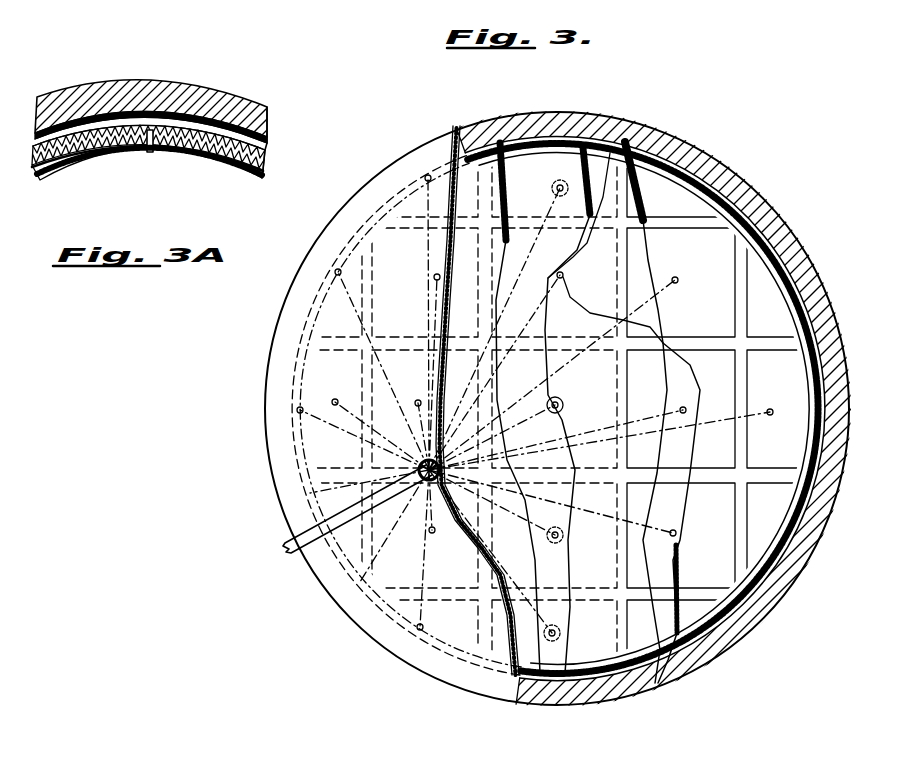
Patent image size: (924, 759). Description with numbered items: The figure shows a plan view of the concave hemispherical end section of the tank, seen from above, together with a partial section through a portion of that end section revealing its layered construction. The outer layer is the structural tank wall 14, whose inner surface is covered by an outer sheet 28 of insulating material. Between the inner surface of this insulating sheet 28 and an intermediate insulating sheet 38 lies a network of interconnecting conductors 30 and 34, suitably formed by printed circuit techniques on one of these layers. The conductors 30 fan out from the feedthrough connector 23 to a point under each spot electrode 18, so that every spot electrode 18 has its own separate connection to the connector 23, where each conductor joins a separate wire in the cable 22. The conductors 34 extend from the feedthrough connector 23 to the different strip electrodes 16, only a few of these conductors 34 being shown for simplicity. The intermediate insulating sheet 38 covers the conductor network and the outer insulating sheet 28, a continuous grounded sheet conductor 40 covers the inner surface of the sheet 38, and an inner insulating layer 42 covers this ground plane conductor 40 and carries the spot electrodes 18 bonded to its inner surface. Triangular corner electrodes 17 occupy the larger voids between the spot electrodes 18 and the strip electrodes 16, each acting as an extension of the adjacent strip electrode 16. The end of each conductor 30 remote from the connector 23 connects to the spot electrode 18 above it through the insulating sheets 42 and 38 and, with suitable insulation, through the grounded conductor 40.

In FIG. 3, the structural tank wall 14 is at (833, 498).
In FIG. 3A, the structural tank wall 14 is at (200, 80).
In FIG. 3, the strip electrode 16 is at (770, 220).
In FIG. 3, the corner electrode 17 is at (320, 293).
In FIG. 3, the spot electrode 18 is at (783, 360).
In FIG. 3A, the spot electrode 18 is at (197, 163).
In FIG. 3, the cable 22 is at (283, 548).
In FIG. 3, the feedthrough connector 23 is at (433, 533).
In FIG. 3, the outer sheet of insulating material 28 is at (490, 170).
In FIG. 3A, the outer sheet of insulating material 28 is at (243, 110).
In FIG. 3, the interconnecting conductor 30 is at (418, 400).
In FIG. 3A, the interconnecting conductor 30 is at (270, 163).
In FIG. 3, the conductor 34 is at (433, 290).
In FIG. 3, the intermediate insulating sheet 38 is at (553, 157).
In FIG. 3A, the intermediate insulating sheet 38 is at (33, 150).
In FIG. 3, the sheet conductor 40 is at (673, 190).
In FIG. 3A, the sheet conductor 40 is at (270, 176).
In FIG. 3, the inner insulating layer 42 is at (628, 150).
In FIG. 3A, the inner insulating layer 42 is at (132, 157).